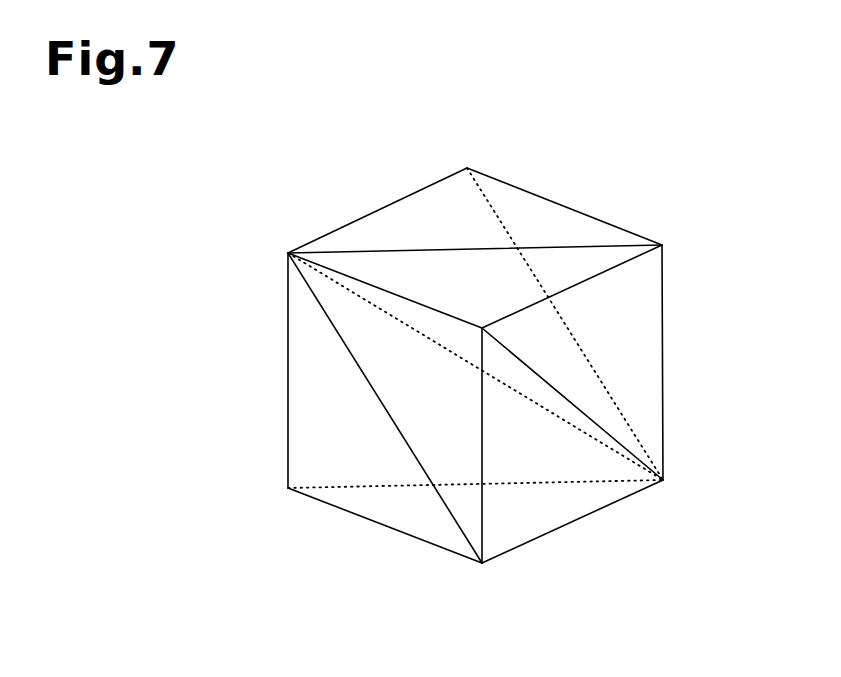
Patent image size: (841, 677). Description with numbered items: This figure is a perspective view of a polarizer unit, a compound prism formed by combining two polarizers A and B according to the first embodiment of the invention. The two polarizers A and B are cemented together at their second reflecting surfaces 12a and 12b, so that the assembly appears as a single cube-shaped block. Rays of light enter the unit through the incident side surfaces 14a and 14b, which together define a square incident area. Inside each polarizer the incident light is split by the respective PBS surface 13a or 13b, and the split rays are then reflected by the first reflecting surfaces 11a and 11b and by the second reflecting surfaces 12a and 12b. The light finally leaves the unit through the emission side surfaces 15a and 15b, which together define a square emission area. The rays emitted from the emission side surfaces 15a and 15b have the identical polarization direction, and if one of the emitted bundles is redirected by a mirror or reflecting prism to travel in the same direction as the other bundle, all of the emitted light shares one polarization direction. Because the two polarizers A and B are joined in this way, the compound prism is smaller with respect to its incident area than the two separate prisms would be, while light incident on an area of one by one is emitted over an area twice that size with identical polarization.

The first reflecting surface 11a is at (313, 402).
The first reflecting surface 11b is at (443, 206).
The second reflecting surface 12a is at (441, 226).
The second reflecting surface 12b is at (345, 238).
The PBS surface 13a is at (370, 352).
The PBS surface 13b is at (400, 273).
The incident side surface 14a is at (543, 468).
The incident side surface 14b is at (653, 350).
The emission side surface 15a is at (366, 447).
The emission side surface 15b is at (430, 227).
The polarizer A is at (313, 458).
The polarizer B is at (573, 222).